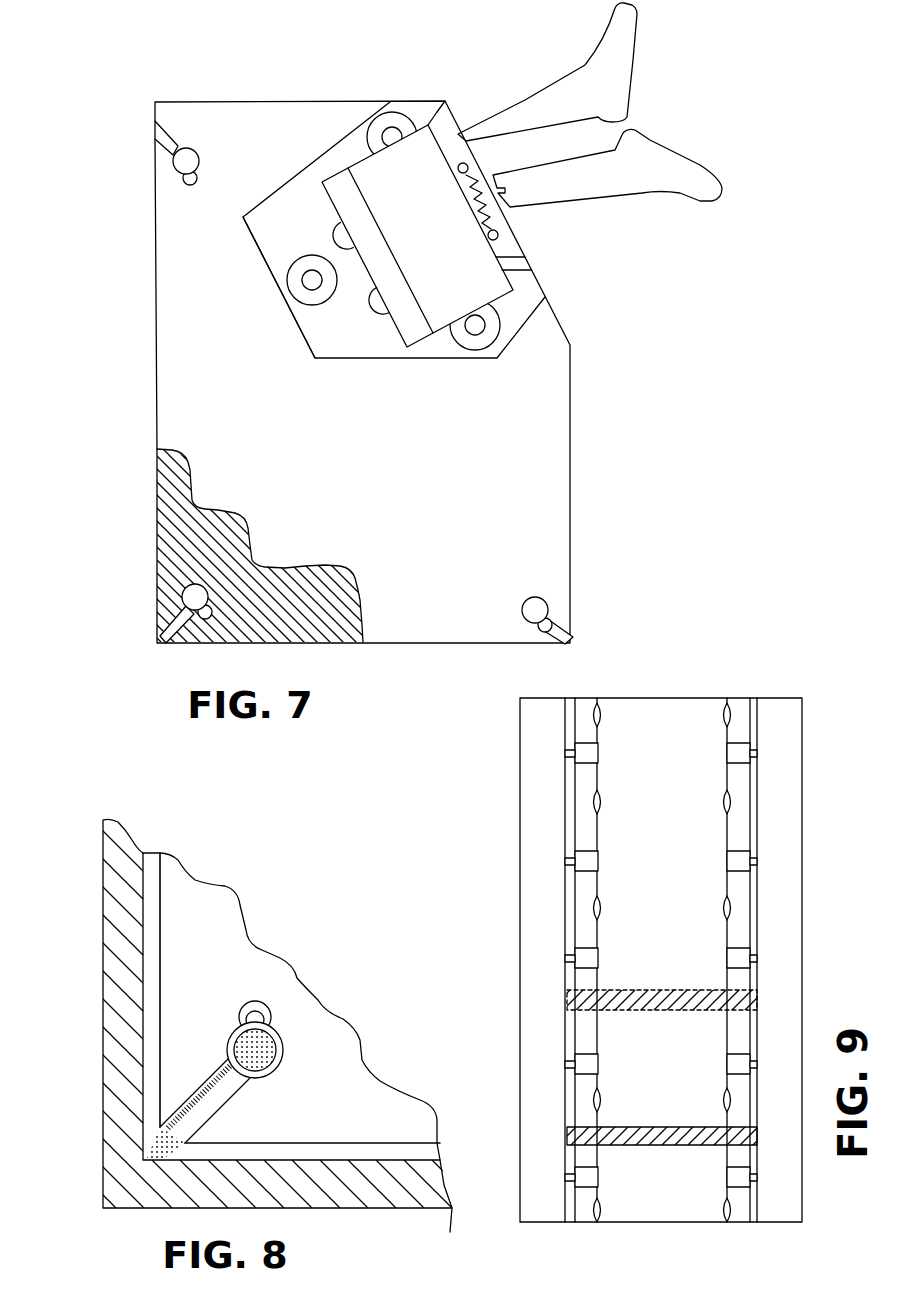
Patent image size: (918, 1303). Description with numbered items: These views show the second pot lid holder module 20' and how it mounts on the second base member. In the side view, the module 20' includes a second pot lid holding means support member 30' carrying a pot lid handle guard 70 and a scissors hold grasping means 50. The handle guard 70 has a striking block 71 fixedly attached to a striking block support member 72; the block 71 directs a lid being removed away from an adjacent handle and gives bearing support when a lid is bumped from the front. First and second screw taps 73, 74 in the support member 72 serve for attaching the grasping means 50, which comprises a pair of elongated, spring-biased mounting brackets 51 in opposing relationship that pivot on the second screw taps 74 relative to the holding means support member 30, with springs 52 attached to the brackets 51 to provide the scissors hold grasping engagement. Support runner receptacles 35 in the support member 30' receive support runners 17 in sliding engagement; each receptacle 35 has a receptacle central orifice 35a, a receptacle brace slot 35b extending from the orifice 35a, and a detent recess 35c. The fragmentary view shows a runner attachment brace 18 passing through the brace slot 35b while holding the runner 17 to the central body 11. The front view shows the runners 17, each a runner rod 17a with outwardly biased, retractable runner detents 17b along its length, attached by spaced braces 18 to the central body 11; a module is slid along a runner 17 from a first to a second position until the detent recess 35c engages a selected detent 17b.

In FIG. 8, the second central body 11 is at (124, 978).
In FIG. 9, the second central body 11 is at (657, 703).
In FIG. 9, the support runner 17 is at (662, 988).
In FIG. 8, the runner rod 17a is at (262, 1048).
In FIG. 9, the runner rod 17a is at (585, 832).
In FIG. 8, the runner detents 17b is at (262, 1021).
In FIG. 9, the runner detents 17b is at (720, 720).
In FIG. 8, the runner attachment braces 18 is at (150, 1150).
In FIG. 9, the runner attachment braces 18 is at (743, 753).
In FIG. 7, the second pot lid holder module 20' is at (301, 372).
In FIG. 9, the holding means support member 30 is at (662, 1157).
In FIG. 7, the second pot lid holding means support member 30' is at (399, 534).
In FIG. 8, the second pot lid holding means support member 30' is at (306, 1042).
In FIG. 9, the second pot lid holding means support member 30' is at (662, 972).
In FIG. 7, the support runner receptacles 35 is at (351, 362).
In FIG. 7, the receptacle central orifice 35a is at (160, 143).
In FIG. 7, the receptacle brace slot 35b is at (168, 100).
In FIG. 7, the detent recess 35c is at (176, 176).
In FIG. 7, the scissors hold grasping means 50 is at (590, 105).
In FIG. 7, the mounting brackets 51 is at (555, 120).
In FIG. 7, the springs 52 is at (497, 235).
In FIG. 7, the pot lid handle guard 70 is at (368, 342).
In FIG. 7, the striking block 71 is at (362, 168).
In FIG. 7, the striking block support member 72 is at (288, 218).
In FIG. 7, the first screw tap 73 is at (290, 277).
In FIG. 7, the second screw tap 74 is at (352, 240).